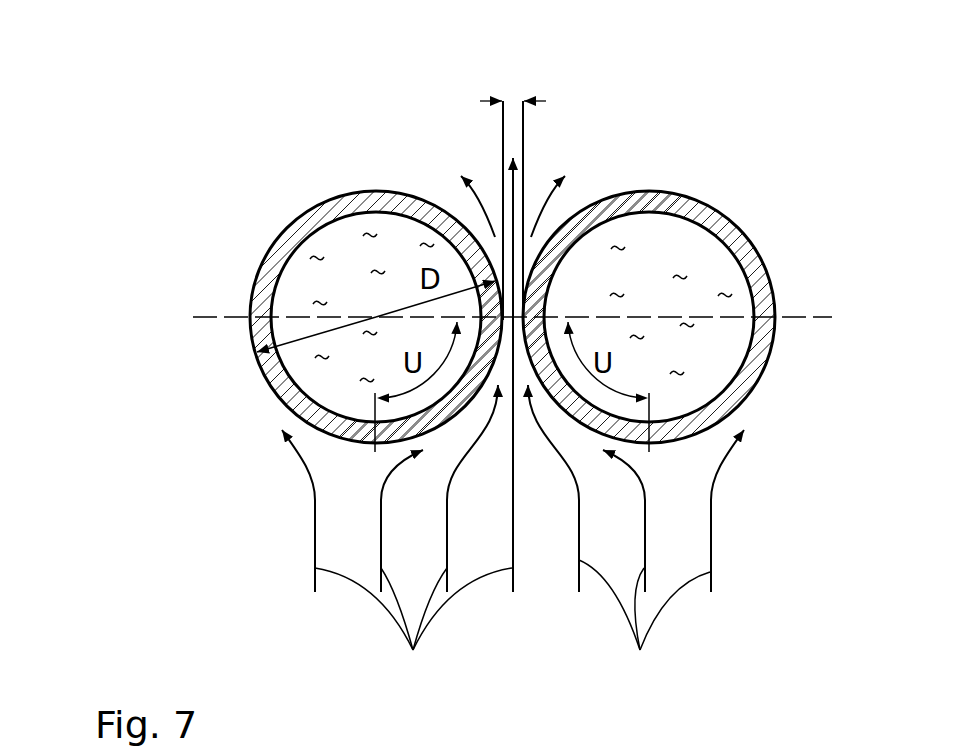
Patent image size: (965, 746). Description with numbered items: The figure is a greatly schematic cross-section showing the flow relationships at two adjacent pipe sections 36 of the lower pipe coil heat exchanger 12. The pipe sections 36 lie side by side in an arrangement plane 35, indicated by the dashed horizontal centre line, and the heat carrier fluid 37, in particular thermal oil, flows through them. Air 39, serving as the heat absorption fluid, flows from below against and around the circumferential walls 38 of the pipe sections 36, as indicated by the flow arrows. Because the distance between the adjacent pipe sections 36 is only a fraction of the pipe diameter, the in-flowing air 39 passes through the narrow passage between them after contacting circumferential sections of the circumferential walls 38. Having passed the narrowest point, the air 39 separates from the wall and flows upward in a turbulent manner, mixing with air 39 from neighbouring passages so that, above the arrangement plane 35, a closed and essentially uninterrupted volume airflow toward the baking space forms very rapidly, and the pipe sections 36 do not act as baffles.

The pipe heat exchanger 12 is at (682, 113).
The arrangement plane 35 is at (798, 317).
The heat exchanger pipe section 36 is at (272, 242).
The heat carrier fluid 37 is at (308, 333).
The circumferential wall 38 is at (270, 278).
The air 39 is at (478, 197).